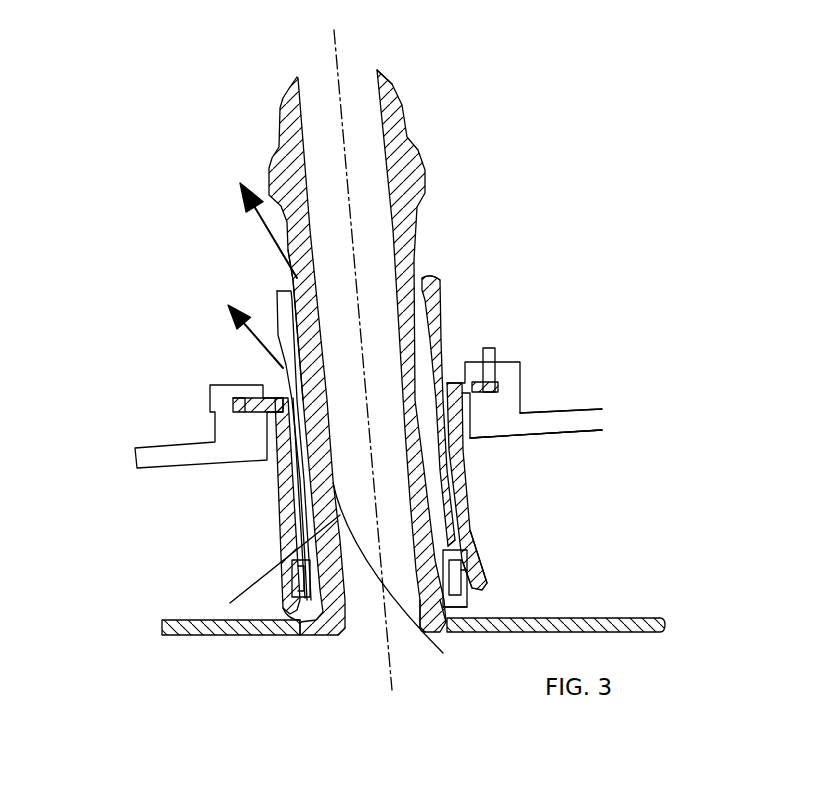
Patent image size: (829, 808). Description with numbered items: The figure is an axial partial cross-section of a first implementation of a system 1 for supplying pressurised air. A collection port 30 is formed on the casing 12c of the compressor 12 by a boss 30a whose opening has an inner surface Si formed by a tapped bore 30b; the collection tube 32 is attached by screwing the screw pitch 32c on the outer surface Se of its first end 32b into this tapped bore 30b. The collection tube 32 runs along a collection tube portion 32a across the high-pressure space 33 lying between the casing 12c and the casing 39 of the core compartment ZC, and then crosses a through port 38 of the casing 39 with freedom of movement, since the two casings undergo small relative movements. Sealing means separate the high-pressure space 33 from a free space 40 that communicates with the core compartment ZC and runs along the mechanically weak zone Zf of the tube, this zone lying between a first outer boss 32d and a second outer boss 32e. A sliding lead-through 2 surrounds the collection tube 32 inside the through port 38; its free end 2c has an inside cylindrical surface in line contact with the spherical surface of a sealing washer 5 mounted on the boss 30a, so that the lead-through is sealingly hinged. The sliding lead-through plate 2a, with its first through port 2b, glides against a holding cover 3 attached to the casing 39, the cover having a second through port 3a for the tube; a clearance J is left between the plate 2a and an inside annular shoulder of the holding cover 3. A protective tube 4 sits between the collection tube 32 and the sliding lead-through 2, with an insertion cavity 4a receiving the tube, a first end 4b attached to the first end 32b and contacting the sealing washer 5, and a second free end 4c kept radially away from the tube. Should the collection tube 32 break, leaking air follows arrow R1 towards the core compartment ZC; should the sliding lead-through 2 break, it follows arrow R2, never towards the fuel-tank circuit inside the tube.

The system for supplying pressurised air 1 is at (488, 97).
The sliding lead-through 2 is at (457, 458).
The sliding lead-through plate 2a is at (470, 383).
The first through port 2b is at (477, 543).
The free end 2c is at (472, 530).
The holding cover 3 is at (223, 390).
The second through port 3a is at (273, 377).
The protective tube 4 is at (440, 320).
The insertion cavity 4a is at (421, 270).
The first end 4b is at (458, 541).
The second free end 4c is at (277, 298).
The sealing washer 5 is at (461, 558).
The compressor 12 is at (177, 674).
The casing of the compressor 12c is at (637, 627).
The collection port 30 is at (377, 644).
The boss 30a is at (468, 600).
The tapped bore 30b is at (338, 640).
The collection tube 32 is at (413, 227).
The collection tube portion 32a is at (297, 530).
The first end of the collection tube 32b is at (420, 630).
The screw pitch 32c is at (468, 578).
The first outer boss 32d is at (313, 627).
The second outer boss 32e is at (297, 258).
The high-pressure space 33 is at (591, 467).
The through port 38 is at (273, 461).
The casing of the core compartment 39 is at (585, 411).
The free space 40 is at (288, 484).
The clearance J is at (489, 348).
The outer surface Se is at (290, 543).
The inner surface Si is at (447, 630).
The mechanically weak zone Zf is at (374, 394).
The core compartment ZC is at (677, 269).
The arrow indicating leaking pressurisation air R1 is at (257, 220).
The arrow indicating leaking pressurisation air R2 is at (257, 330).